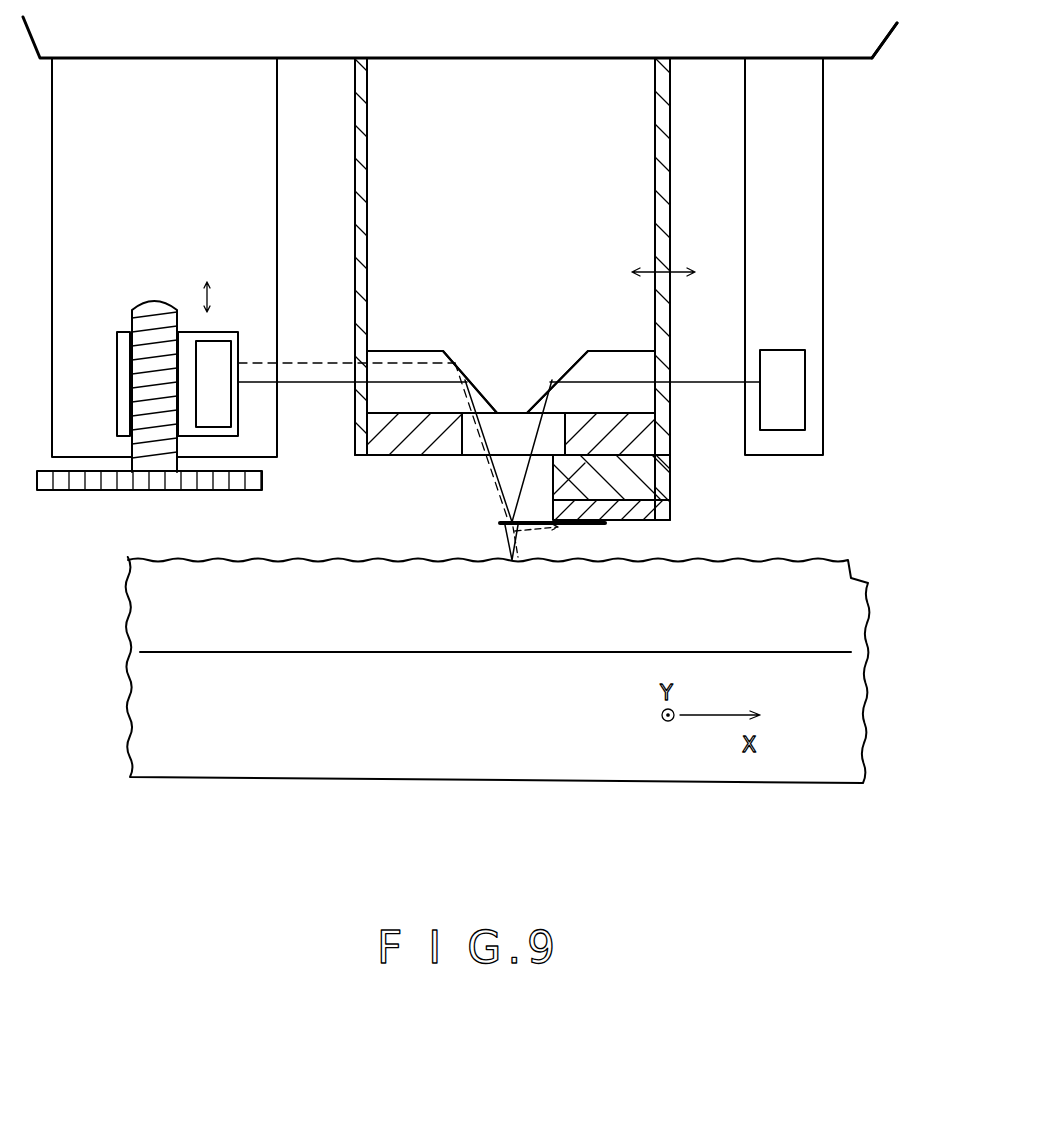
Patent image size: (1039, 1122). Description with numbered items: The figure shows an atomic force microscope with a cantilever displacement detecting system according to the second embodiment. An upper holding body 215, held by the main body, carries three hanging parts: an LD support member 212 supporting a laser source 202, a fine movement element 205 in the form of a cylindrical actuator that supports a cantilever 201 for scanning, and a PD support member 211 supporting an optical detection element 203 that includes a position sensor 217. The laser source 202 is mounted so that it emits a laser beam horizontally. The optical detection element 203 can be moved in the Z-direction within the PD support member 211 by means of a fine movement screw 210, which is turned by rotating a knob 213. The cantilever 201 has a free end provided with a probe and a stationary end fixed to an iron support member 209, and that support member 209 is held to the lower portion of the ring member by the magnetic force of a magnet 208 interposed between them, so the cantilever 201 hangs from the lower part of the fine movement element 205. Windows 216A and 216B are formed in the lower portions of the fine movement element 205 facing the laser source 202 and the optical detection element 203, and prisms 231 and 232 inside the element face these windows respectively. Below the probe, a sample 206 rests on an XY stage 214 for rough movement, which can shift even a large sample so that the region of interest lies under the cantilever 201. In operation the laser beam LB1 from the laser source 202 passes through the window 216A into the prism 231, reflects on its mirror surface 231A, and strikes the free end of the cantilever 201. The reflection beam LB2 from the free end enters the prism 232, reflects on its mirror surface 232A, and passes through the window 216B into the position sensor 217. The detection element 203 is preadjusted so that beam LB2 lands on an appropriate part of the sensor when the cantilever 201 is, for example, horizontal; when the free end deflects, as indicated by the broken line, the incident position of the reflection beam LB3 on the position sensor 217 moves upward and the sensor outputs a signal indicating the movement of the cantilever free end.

The cantilever 201 is at (500, 523).
The laser source 202 is at (787, 412).
The optical detection element 203 is at (227, 337).
The fine movement element 205 is at (662, 230).
The sample 206 is at (820, 617).
The magnet 208 is at (670, 485).
The support member 209 is at (670, 513).
The fine movement screw 210 is at (148, 300).
The PD support member 211 is at (240, 198).
The LD support member 212 is at (798, 312).
The knob 213 is at (73, 485).
The XY stage 214 is at (618, 747).
The upper holding body 215 is at (845, 42).
The window 216A is at (700, 412).
The window 216B is at (353, 347).
The position sensor 217 is at (217, 372).
The prism 231 is at (628, 358).
The mirror surface 231A is at (558, 367).
The prism 232 is at (375, 352).
The mirror surface 232A is at (468, 367).
The laser beam LB1 is at (710, 383).
The reflection beam LB2 is at (510, 447).
The reflection beam LB3 is at (492, 467).